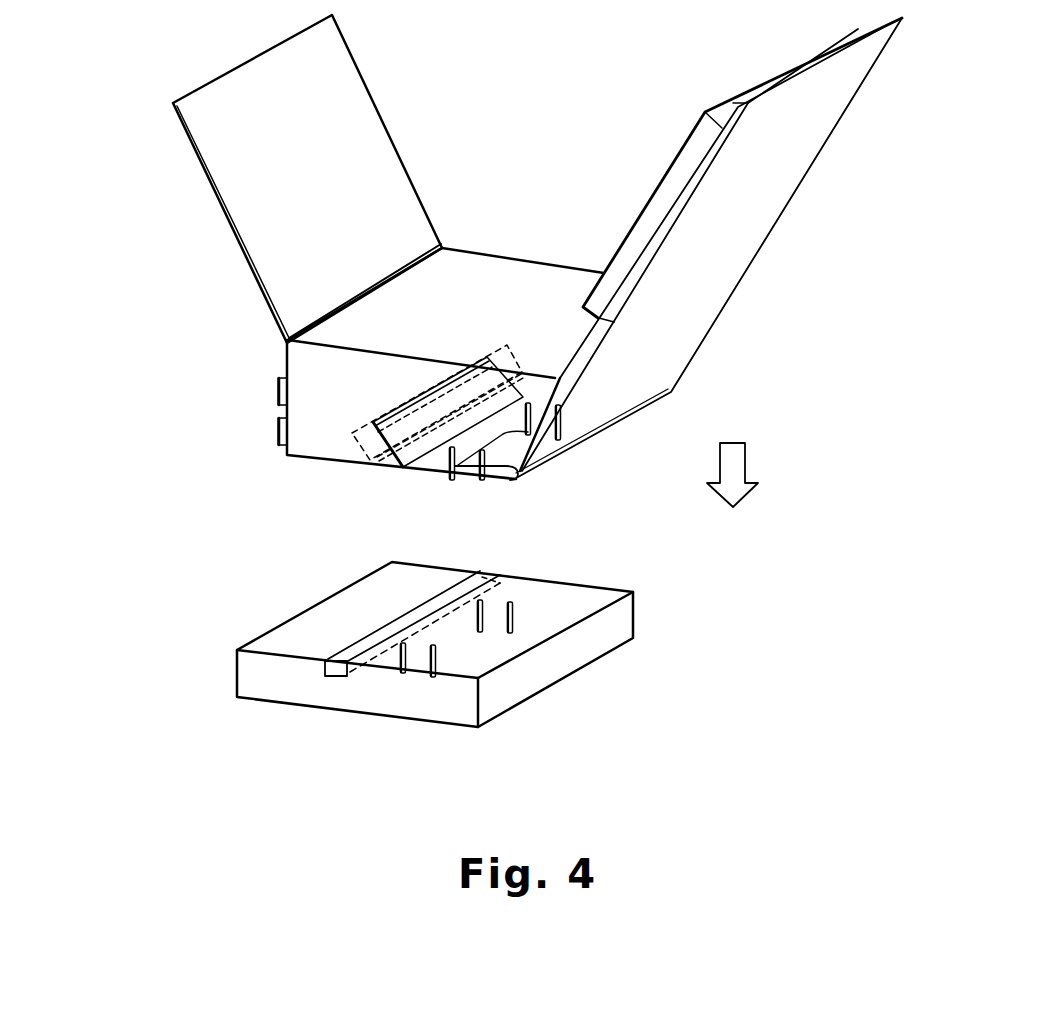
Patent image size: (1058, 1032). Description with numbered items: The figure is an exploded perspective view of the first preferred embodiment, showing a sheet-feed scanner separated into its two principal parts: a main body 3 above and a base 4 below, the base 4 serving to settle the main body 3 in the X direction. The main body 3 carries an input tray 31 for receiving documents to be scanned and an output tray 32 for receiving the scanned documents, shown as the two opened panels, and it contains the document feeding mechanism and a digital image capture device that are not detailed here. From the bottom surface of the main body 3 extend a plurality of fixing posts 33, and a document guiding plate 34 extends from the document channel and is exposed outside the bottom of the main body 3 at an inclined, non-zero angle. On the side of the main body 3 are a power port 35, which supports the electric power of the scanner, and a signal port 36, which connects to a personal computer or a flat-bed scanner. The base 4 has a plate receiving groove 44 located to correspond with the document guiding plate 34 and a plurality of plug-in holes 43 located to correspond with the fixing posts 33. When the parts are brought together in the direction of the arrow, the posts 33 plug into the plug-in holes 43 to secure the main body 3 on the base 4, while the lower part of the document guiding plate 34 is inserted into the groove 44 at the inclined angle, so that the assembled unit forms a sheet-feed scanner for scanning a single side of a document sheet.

The main body 3 is at (531, 173).
The input tray 31 is at (807, 97).
The output tray 32 is at (197, 168).
The fixing posts 33 is at (484, 481).
The document guiding plate 34 is at (405, 460).
The power port 35 is at (278, 390).
The signal port 36 is at (278, 435).
The base 4 is at (222, 660).
The plug-in holes 43 is at (433, 678).
The plate receiving groove 44 is at (333, 678).